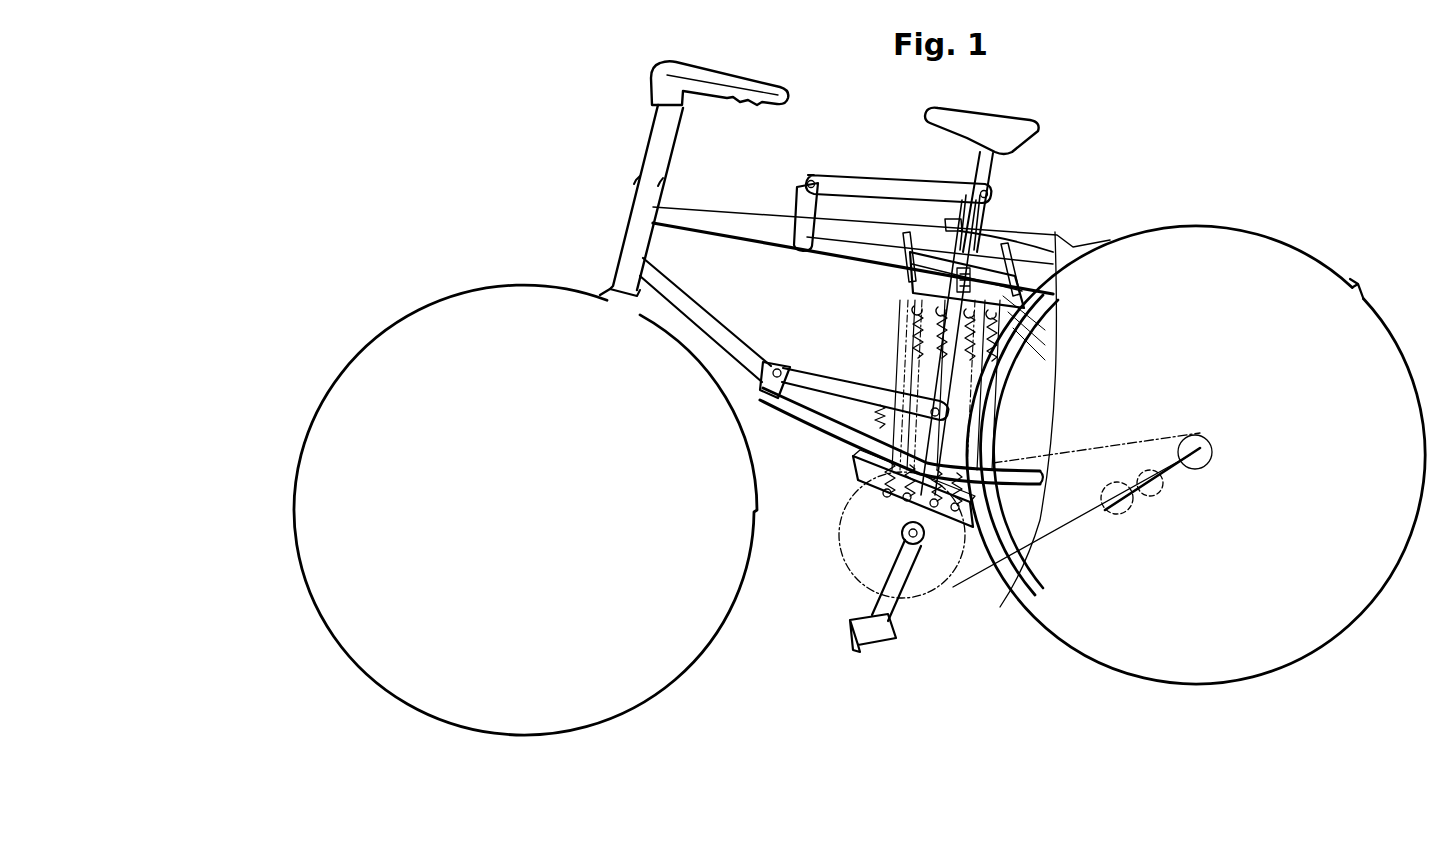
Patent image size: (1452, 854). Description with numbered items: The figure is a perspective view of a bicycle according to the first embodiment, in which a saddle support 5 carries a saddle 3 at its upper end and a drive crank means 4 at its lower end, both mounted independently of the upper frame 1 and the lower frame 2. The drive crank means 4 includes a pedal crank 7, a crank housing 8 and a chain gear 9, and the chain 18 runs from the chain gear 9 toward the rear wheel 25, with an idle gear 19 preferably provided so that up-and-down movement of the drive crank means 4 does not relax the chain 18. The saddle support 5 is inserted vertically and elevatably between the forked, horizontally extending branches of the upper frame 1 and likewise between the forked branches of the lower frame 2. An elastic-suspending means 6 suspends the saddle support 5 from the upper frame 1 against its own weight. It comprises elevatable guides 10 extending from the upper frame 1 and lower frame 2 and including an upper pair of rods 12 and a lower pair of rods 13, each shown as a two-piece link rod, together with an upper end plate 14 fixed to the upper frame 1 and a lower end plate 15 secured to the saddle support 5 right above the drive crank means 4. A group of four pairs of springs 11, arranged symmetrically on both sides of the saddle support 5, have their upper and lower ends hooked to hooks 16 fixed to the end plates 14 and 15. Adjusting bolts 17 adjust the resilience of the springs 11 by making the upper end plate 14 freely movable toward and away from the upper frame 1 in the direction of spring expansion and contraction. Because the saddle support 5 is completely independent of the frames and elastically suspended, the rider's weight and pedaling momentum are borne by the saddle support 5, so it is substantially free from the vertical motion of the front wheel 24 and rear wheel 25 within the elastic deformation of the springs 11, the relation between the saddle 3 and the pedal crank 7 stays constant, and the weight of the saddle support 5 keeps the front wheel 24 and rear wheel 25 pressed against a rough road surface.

The upper frame 1 is at (728, 378).
The lower frame 2 is at (740, 345).
The saddle 3 is at (977, 126).
The drive crank means 4 is at (897, 538).
The saddle support 5 is at (945, 360).
The elastic-suspending means 6 is at (996, 348).
The pedal crank 7 is at (870, 590).
The crank housing 8 is at (916, 546).
The chain gear 9 is at (935, 600).
The elevatable guide 10 is at (800, 183).
The spring 11 is at (940, 332).
The upper rod 12 is at (848, 178).
The lower rod 13 is at (830, 388).
The upper end plate 14 is at (905, 272).
The lower end plate 15 is at (855, 477).
The hook 16 is at (1035, 352).
The adjusting bolt 17 is at (990, 248).
The chain 18 is at (1075, 540).
The idle gear 19 is at (1125, 512).
The front wheel 24 is at (693, 662).
The rear wheel 25 is at (1103, 660).